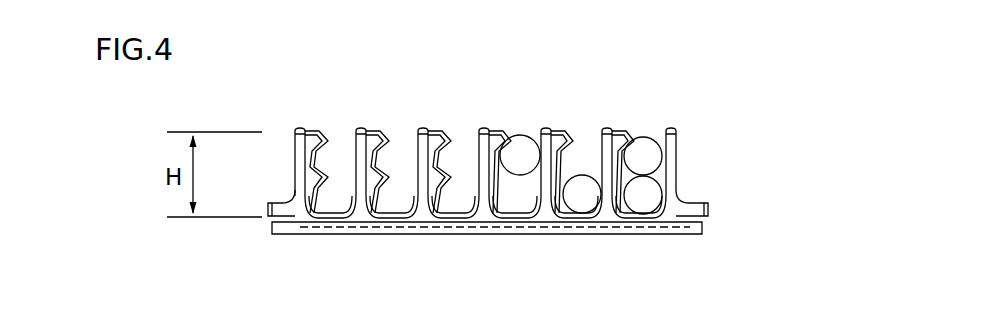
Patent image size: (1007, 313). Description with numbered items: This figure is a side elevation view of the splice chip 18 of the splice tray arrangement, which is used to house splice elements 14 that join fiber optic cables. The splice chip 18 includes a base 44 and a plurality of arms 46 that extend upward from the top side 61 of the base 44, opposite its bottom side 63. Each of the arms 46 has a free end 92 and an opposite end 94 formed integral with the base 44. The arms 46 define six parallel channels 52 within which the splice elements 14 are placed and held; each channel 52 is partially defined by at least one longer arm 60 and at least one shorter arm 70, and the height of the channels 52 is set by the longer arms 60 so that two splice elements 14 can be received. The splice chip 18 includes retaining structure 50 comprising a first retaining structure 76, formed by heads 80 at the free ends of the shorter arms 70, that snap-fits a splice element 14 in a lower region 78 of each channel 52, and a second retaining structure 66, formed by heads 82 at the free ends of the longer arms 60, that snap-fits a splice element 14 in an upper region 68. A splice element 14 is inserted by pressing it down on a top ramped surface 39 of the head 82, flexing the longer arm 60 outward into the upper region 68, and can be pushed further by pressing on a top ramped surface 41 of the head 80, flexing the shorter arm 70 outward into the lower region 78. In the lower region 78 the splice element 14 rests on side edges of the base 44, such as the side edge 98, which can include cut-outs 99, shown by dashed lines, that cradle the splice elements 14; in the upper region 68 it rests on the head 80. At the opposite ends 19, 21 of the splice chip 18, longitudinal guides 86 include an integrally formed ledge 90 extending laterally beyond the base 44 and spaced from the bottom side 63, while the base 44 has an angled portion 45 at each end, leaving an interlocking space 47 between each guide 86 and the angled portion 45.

The splice chip 18 is at (647, 68).
The splice element 14 is at (524, 134).
The end of splice chip 19 is at (168, 226).
The end of splice chip 21 is at (752, 218).
The top ramped surface 39 is at (501, 132).
The top ramped surface 41 is at (440, 168).
The base 44 is at (488, 224).
The angled portion 45 is at (293, 219).
The arms 46 is at (311, 176).
The interlocking space 47 is at (242, 229).
The retaining structure 50 is at (324, 165).
The channels 52 is at (402, 220).
The longer arm 60 is at (313, 131).
The top side 61 is at (333, 215).
The bottom side 63 is at (590, 234).
The second retaining structure 66 is at (437, 138).
The upper region 68 is at (413, 163).
The shorter arm 70 is at (306, 221).
The first retaining structure 76 is at (495, 181).
The lower region 78 is at (413, 210).
The head 80 is at (506, 204).
The head 82 is at (493, 131).
The longitudinal guides 86 is at (288, 242).
The ledge 90 is at (272, 202).
The free end 92 is at (564, 131).
The opposite end 94 is at (541, 212).
The second side edge 98 is at (628, 228).
The cut-outs 99 is at (327, 229).